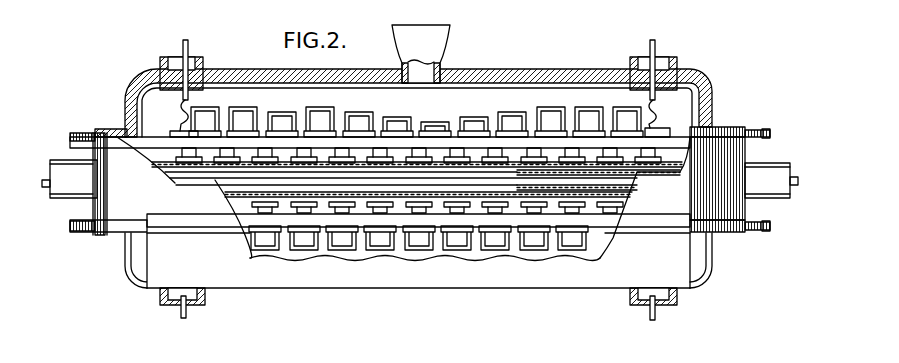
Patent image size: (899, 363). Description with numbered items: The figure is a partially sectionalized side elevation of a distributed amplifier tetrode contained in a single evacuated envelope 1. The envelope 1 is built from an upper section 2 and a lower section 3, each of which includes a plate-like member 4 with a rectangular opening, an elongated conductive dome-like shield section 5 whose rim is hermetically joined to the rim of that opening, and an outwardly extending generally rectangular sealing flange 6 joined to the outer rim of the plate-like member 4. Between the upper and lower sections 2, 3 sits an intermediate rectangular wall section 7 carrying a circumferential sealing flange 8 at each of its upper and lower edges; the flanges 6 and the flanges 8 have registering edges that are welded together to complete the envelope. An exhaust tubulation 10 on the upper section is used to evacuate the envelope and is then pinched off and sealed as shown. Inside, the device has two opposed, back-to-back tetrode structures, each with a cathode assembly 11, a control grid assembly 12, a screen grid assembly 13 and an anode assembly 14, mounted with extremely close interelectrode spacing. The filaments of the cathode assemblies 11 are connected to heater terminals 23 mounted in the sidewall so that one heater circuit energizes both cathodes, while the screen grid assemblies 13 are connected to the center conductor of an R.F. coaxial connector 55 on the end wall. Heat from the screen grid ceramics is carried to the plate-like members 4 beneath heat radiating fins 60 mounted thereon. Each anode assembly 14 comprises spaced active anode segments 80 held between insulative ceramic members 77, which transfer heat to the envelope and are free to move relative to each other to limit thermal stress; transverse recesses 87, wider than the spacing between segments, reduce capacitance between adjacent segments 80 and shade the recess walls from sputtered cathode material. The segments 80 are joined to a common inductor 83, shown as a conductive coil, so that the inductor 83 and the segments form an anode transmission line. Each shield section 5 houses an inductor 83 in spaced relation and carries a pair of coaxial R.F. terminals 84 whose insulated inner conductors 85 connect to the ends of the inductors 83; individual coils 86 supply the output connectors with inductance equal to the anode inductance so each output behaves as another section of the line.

The evacuated envelope 1 is at (138, 55).
The upper envelope section 2 is at (714, 83).
The lower envelope section 3 is at (714, 276).
The plate-like member 4 is at (727, 127).
The dome-like shield section 5 is at (697, 270).
The sealing flange 6 is at (760, 129).
The intermediate wall section 7 is at (93, 153).
The circumferential sealing flange 8 is at (764, 139).
The exhaust tubulation 10 is at (441, 57).
The cathode assembly 11 is at (652, 175).
The control grid assembly 12 is at (641, 184).
The screen grid assembly 13 is at (240, 190).
The anode assembly 14 is at (267, 222).
The heater terminal 23 is at (797, 176).
The R.F. coaxial connector 55 is at (44, 188).
The heat radiating fin 60 is at (557, 68).
The insulative member 77 is at (513, 137).
The active anode segment 80 is at (332, 156).
The inductor 83 is at (432, 127).
The coaxial R.F. terminal 84 is at (203, 62).
The inner conductor 85 is at (186, 42).
The coil 86 is at (177, 113).
The transverse recess 87 is at (363, 153).